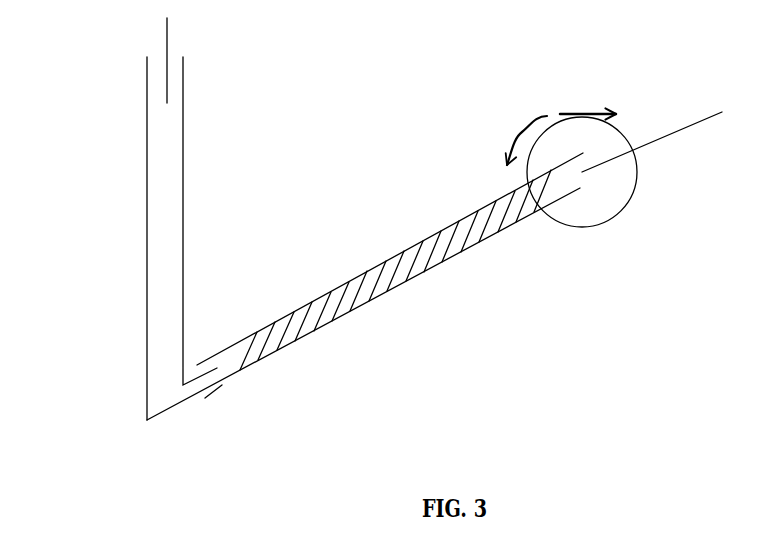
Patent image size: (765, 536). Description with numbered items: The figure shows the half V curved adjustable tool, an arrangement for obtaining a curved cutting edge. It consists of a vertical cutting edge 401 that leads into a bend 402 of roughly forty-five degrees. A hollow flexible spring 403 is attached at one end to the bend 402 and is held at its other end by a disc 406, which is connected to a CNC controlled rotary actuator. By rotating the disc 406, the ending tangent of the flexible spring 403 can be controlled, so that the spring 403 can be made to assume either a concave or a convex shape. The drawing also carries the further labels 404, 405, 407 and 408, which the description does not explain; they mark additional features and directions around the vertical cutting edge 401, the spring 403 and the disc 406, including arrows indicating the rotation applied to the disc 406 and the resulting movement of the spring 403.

The vertical cutting edge 401 is at (133, 178).
The 45 degree bend 402 is at (167, 425).
The hollow flexible spring 403 is at (393, 300).
The inlet line 404 is at (167, 32).
The guide line 405 is at (695, 135).
The disc 406 is at (605, 225).
The flow direction arrow 407 is at (588, 95).
The curved flow arrow 408 is at (511, 139).